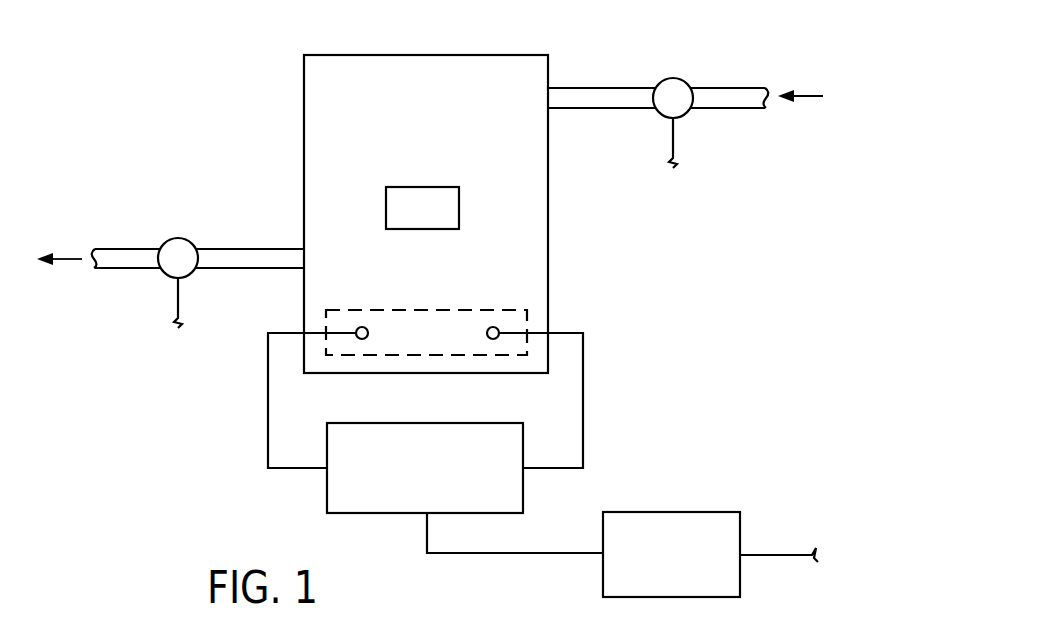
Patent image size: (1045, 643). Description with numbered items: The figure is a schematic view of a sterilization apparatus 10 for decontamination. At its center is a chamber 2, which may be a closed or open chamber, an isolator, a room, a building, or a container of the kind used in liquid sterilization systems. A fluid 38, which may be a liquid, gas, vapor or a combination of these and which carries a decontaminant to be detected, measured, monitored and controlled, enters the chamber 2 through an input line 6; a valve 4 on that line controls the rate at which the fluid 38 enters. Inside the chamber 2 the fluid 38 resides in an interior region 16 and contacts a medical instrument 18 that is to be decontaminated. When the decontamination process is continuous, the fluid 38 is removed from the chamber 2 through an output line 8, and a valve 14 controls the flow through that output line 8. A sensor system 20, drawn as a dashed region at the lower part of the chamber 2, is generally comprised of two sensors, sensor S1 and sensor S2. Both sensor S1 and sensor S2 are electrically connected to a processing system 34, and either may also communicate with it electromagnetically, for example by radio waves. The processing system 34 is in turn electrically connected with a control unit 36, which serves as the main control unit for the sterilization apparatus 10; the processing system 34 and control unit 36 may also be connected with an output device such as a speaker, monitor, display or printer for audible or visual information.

The sterilization apparatus 10 is at (214, 62).
The chamber 2 is at (535, 55).
The interior region 16 is at (370, 98).
The medical instrument 18 is at (447, 212).
The sensor system 20 is at (519, 305).
The sensor S1 is at (363, 339).
The sensor S2 is at (494, 339).
The processing system 34 is at (327, 493).
The control unit 36 is at (675, 512).
The valve 4 is at (676, 78).
The input line 6 is at (722, 110).
The fluid 38 is at (806, 94).
The output line 8 is at (248, 249).
The valve 14 is at (173, 238).